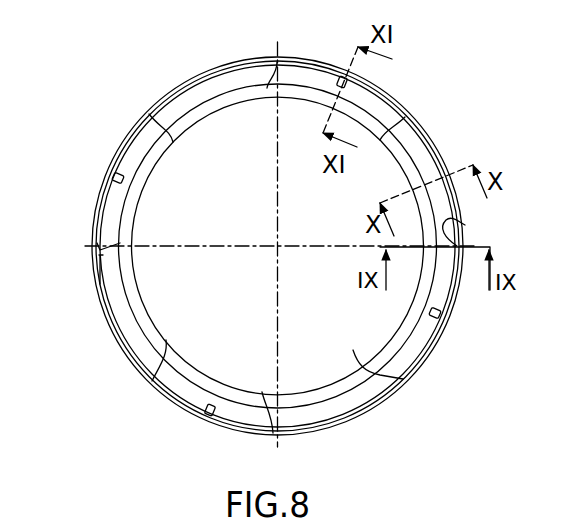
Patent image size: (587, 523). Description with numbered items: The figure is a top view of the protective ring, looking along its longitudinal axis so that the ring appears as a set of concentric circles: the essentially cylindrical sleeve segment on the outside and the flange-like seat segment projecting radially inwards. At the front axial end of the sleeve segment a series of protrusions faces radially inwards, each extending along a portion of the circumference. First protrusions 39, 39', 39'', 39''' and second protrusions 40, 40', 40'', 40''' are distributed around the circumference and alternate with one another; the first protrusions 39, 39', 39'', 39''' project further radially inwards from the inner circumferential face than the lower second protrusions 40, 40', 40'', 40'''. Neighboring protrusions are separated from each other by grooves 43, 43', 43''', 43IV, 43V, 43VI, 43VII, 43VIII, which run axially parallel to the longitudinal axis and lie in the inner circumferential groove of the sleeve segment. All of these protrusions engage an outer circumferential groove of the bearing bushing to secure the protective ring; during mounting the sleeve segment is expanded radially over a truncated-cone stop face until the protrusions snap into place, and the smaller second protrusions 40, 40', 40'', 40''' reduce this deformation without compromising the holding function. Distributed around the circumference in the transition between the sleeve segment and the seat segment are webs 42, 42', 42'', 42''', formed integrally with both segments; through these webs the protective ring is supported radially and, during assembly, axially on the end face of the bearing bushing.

The first protrusion 39 is at (304, 246).
The first protrusion 39' is at (205, 44).
The first protrusion 39'' is at (146, 271).
The first protrusion 39''' is at (315, 379).
The second protrusion 40 is at (277, 246).
The second protrusion 40' is at (123, 107).
The second protrusion 40'' is at (202, 350).
The second protrusion 40''' is at (401, 325).
The web 42 is at (329, 48).
The web 42' is at (74, 190).
The web 42'' is at (177, 424).
The web 42''' is at (475, 328).
The groove 43 is at (384, 154).
The groove 43' is at (263, 103).
The groove 43''' is at (177, 159).
The groove 43IV is at (120, 243).
The groove 43V is at (166, 340).
The groove 43VI is at (262, 392).
The groove 43VII is at (372, 349).
The groove 43VIII is at (465, 225).